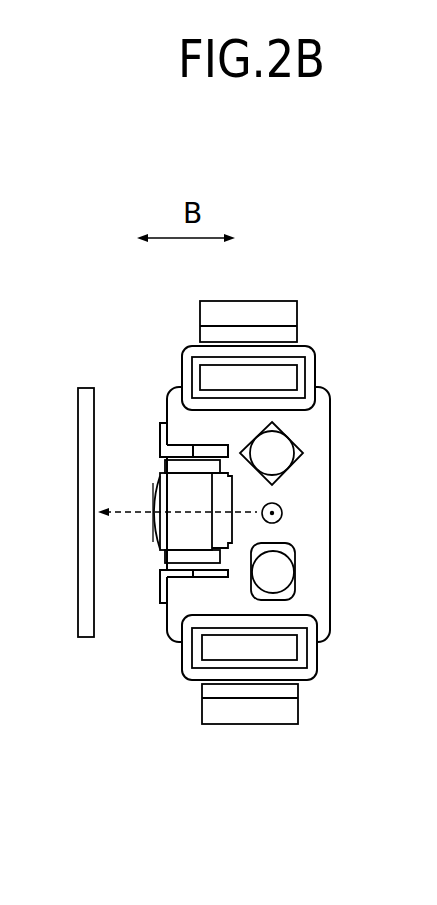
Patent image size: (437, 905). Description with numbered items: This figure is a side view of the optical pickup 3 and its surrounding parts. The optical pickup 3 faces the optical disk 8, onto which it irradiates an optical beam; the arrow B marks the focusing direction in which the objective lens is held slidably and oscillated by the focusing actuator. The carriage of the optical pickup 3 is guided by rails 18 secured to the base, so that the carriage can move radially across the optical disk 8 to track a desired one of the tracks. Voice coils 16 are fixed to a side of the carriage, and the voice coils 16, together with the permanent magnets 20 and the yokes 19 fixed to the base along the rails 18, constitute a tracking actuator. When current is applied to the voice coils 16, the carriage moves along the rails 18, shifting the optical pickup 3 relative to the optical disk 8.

The optical pickup 3 is at (313, 513).
The optical disk 8 is at (85, 462).
The voice coils 16 is at (308, 373).
The rails 18 is at (278, 452).
The yokes 19 is at (283, 368).
The permanent magnets 20 is at (202, 337).